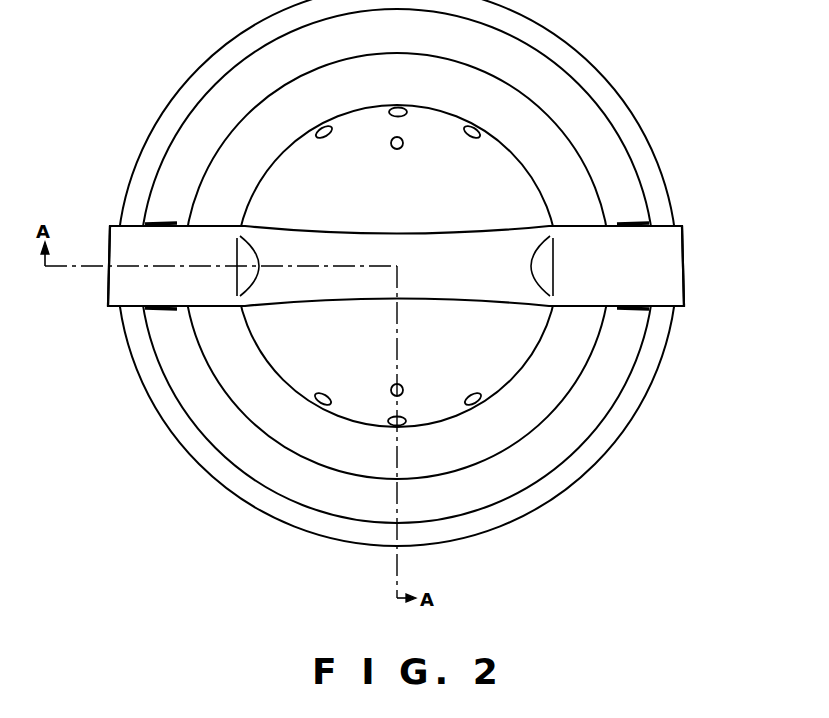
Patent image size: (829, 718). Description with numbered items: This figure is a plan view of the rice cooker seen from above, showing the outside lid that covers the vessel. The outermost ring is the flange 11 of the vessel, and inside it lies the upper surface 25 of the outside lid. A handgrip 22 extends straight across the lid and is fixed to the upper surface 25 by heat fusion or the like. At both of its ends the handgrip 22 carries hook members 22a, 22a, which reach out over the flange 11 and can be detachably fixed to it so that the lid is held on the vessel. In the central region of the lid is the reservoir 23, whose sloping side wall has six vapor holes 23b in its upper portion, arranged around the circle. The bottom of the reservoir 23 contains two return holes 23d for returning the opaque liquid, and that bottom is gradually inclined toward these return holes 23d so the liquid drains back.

The flange 11 is at (217, 67).
The handgrip 22 is at (423, 247).
The hook members 22a is at (106, 236).
The reservoir 23 is at (428, 322).
The vapor holes 23b is at (475, 392).
The return holes 23d is at (397, 383).
The upper surface 25 is at (245, 191).